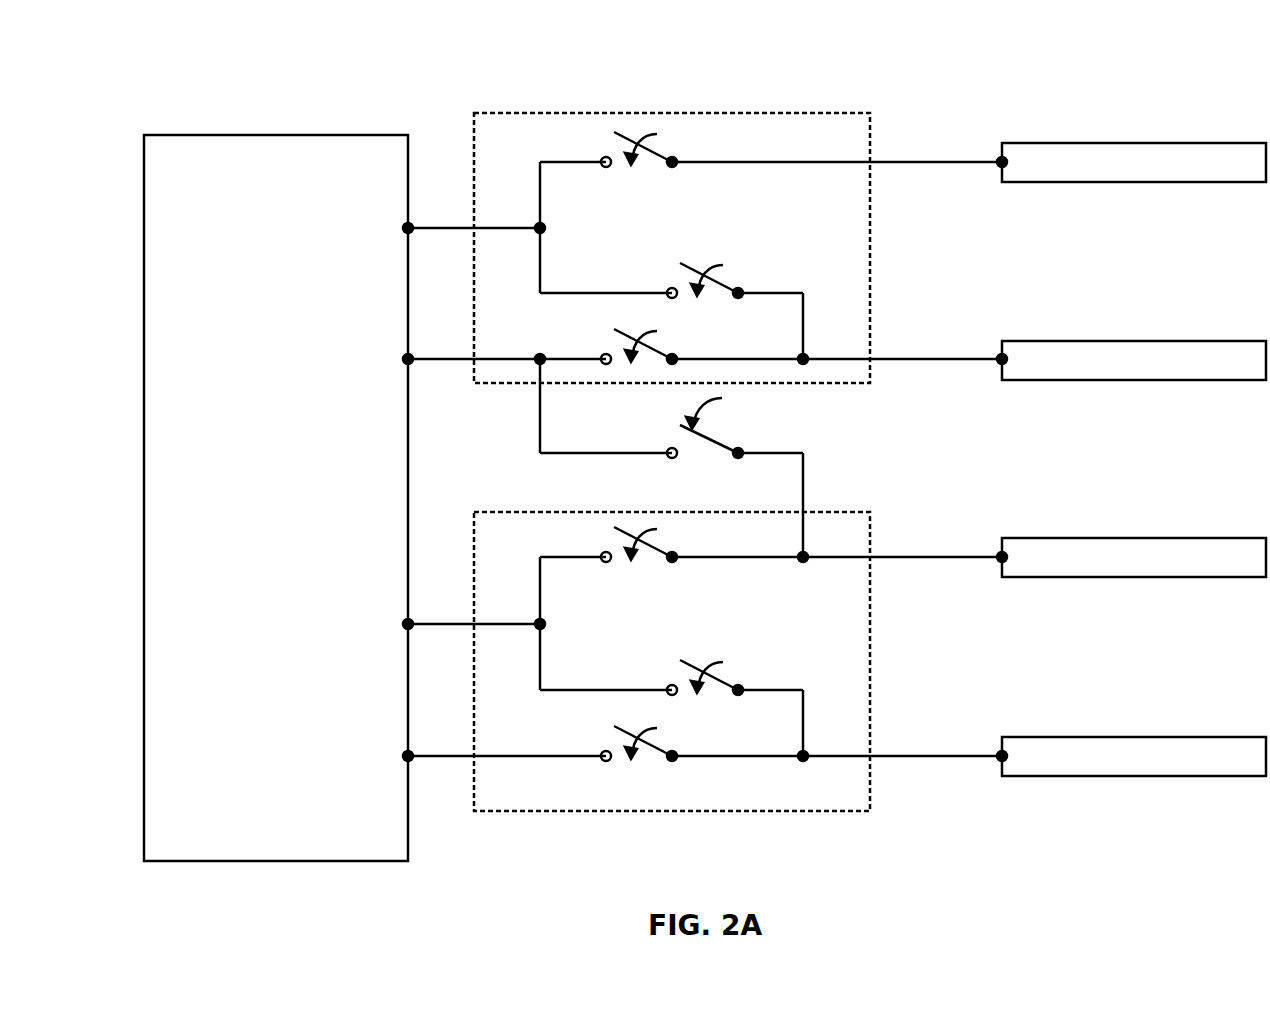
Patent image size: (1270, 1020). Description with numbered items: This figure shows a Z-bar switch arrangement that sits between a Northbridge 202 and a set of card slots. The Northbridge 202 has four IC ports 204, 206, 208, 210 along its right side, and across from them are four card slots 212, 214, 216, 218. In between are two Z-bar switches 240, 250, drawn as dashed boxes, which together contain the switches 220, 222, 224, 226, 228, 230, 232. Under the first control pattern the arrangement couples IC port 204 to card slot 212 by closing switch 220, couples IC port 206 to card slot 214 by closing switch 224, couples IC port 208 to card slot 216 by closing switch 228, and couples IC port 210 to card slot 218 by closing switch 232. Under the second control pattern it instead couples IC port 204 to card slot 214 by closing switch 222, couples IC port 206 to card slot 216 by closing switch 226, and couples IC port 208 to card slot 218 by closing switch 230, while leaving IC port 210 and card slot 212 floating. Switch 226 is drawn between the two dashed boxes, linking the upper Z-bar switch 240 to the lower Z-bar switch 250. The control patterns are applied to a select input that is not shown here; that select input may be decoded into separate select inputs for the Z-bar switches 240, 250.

The Northbridge 202 is at (276, 498).
The IC port 204 is at (419, 229).
The IC port 206 is at (452, 360).
The IC port 208 is at (419, 625).
The IC port 210 is at (452, 757).
The card slot 212 is at (1131, 162).
The card slot 214 is at (1131, 360).
The card slot 216 is at (1131, 557).
The card slot 218 is at (1131, 756).
The switch 220 is at (694, 149).
The switch 222 is at (760, 280).
The switch 224 is at (694, 346).
The switch 226 is at (760, 428).
The switch 228 is at (694, 544).
The switch 230 is at (760, 677).
The switch 232 is at (694, 743).
The Z-bar switch 240 is at (672, 113).
The Z-bar switch 250 is at (672, 811).